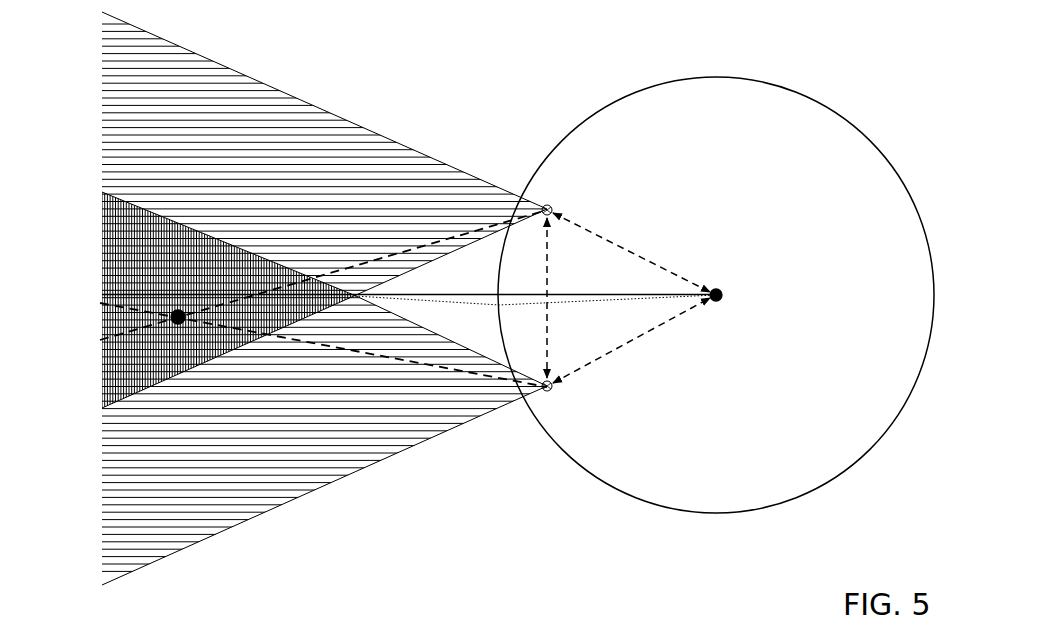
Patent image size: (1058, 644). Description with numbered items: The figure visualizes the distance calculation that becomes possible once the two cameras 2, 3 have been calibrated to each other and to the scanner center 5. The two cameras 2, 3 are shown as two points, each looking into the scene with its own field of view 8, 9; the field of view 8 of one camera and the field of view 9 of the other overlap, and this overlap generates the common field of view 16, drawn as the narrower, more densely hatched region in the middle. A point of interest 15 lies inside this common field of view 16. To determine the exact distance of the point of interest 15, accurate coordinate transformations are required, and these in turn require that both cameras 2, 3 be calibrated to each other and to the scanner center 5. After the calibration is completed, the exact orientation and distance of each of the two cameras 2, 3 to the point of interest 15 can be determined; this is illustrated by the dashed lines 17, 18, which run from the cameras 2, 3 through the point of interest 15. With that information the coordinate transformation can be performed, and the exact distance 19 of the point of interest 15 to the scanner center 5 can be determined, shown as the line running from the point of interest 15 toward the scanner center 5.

The camera 2 is at (548, 388).
The camera 3 is at (548, 207).
The scanner center 5 is at (716, 294).
The field of view 8 is at (252, 442).
The field of view 9 is at (347, 167).
The point of interest 15 is at (178, 317).
The field of view 16 is at (162, 257).
The dashed line 17 is at (392, 255).
The dashed line 18 is at (323, 347).
The distance 19 is at (390, 308).